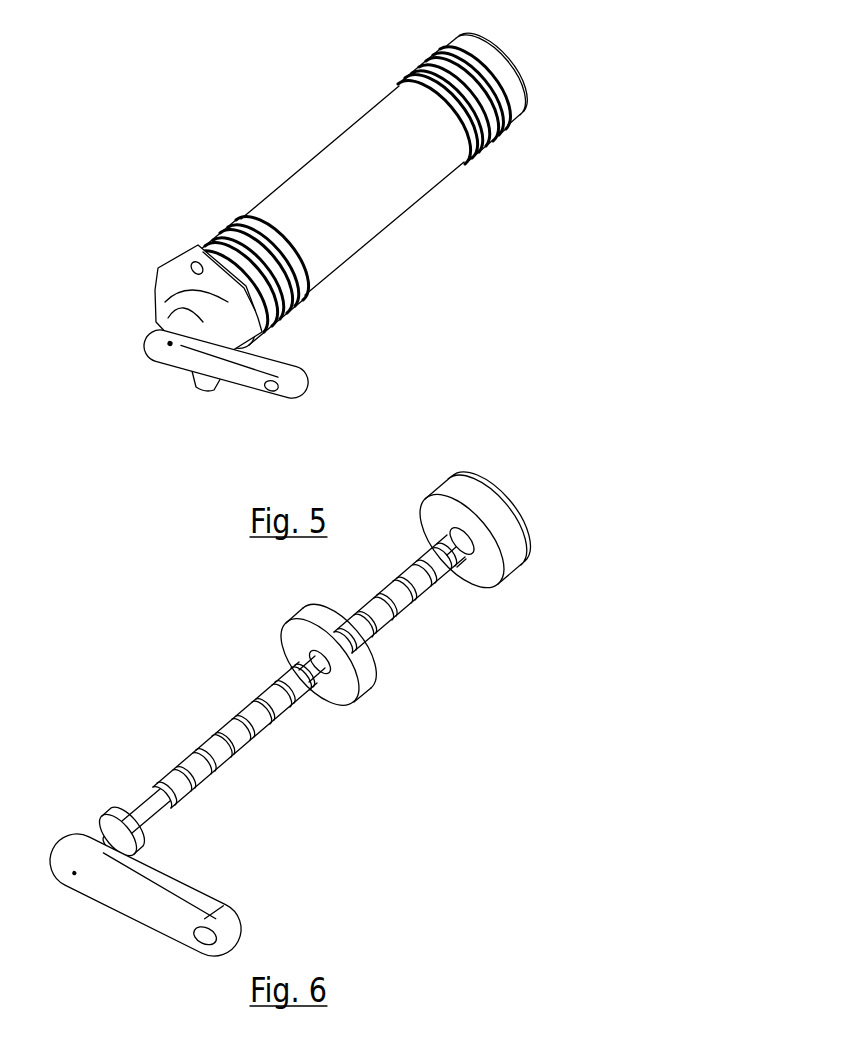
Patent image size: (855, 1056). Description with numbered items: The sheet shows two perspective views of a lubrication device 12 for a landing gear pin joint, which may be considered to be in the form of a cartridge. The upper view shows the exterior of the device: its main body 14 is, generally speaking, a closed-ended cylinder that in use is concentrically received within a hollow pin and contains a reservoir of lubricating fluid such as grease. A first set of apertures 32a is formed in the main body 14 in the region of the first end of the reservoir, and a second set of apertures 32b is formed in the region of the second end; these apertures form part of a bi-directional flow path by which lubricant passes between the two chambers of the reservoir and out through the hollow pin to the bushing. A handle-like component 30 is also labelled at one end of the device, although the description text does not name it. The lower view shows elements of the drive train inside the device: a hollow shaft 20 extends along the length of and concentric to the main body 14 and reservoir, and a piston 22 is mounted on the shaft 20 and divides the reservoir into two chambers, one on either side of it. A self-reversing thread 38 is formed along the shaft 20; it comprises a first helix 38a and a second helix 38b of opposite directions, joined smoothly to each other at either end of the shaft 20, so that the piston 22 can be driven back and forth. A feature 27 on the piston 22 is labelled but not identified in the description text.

In FIG. 5, the lubrication device 12 is at (163, 245).
In FIG. 5, the main body 14 is at (333, 233).
In FIG. 5, the first set of apertures 32a is at (233, 227).
In FIG. 5, the second set of apertures 32b is at (507, 97).
In FIG. 5, the crank handle 30 is at (187, 377).
In FIG. 6, the shaft 20 is at (290, 680).
In FIG. 6, the piston 22 is at (363, 657).
In FIG. 6, the flat surface of nut 27 is at (367, 677).
In FIG. 6, the self-reversing thread 38 is at (274, 713).
In FIG. 6, the first helix 38a is at (195, 768).
In FIG. 6, the second helix 38b is at (195, 768).